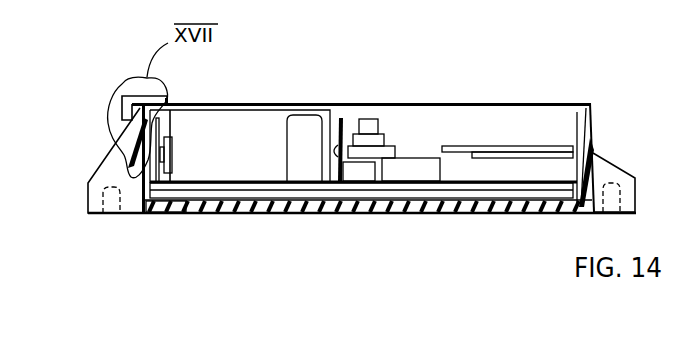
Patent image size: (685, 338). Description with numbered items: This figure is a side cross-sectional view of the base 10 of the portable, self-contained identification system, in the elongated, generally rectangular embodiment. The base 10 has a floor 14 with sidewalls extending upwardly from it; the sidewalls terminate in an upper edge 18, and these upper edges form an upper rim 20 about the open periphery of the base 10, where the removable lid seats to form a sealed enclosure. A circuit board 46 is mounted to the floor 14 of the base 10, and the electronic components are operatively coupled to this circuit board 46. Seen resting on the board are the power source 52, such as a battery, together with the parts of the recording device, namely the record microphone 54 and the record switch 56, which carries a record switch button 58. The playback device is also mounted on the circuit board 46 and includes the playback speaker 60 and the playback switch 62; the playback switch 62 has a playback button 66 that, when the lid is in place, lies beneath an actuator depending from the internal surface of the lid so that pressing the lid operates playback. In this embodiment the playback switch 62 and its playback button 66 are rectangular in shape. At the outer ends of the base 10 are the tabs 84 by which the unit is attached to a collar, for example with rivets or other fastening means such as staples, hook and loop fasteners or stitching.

The base 10 is at (541, 205).
The floor 14 is at (172, 205).
The upper edge 18 is at (548, 103).
The upper rim 20 is at (264, 103).
The circuit board 46 is at (483, 185).
The power source 52 is at (243, 168).
The record microphone 54 is at (408, 168).
The record switch 56 is at (353, 173).
The record switch button 58 is at (343, 120).
The playback speaker 60 is at (552, 142).
The playback switch 62 is at (383, 152).
The playback button 66 is at (370, 120).
The tabs 84 is at (98, 187).